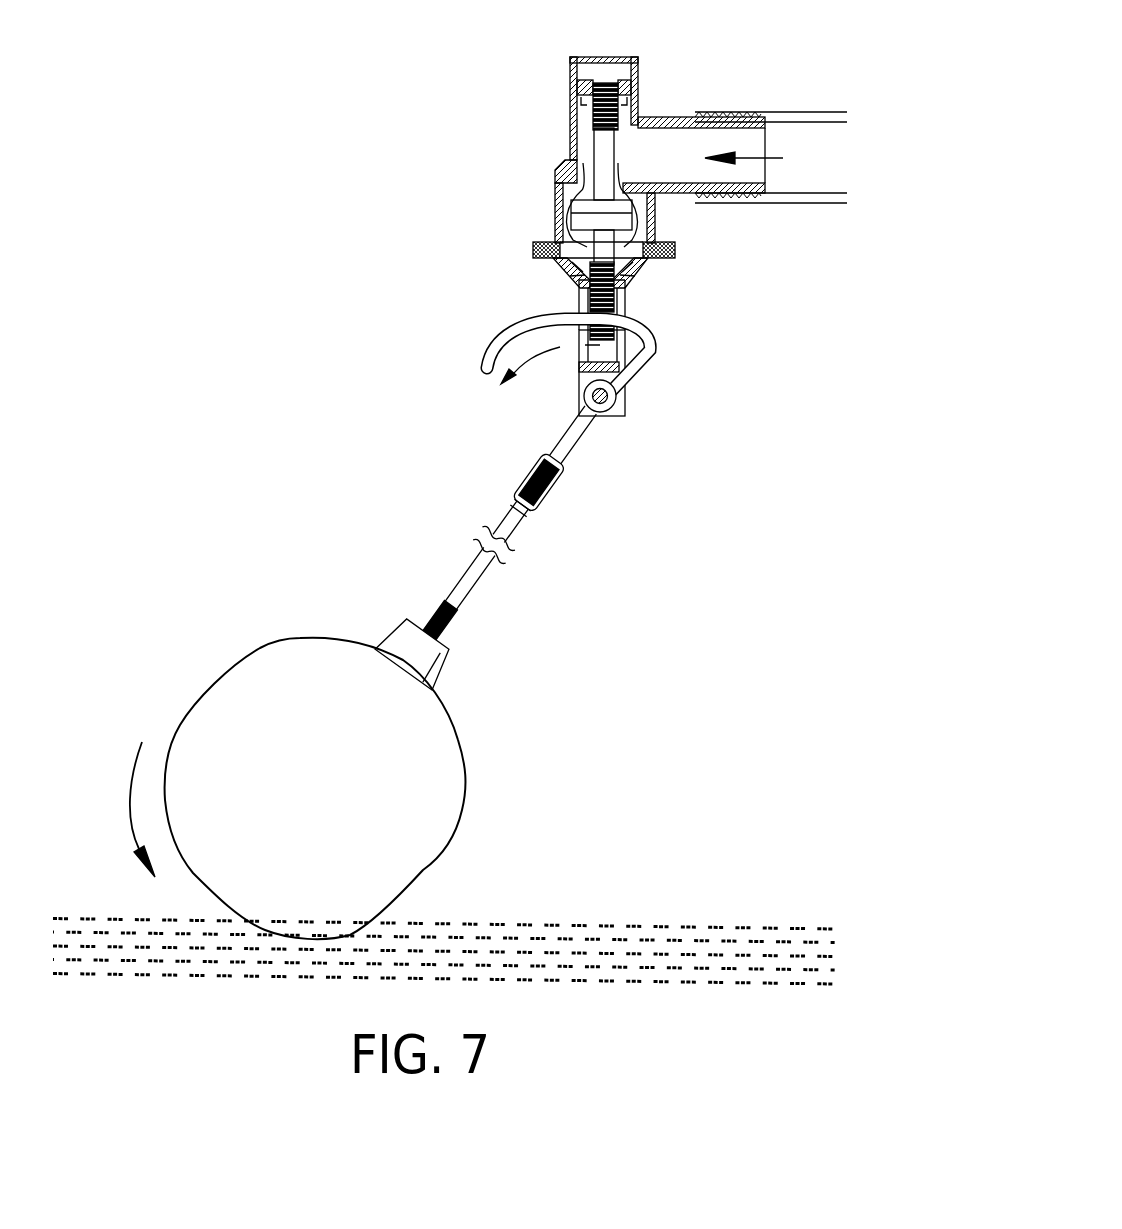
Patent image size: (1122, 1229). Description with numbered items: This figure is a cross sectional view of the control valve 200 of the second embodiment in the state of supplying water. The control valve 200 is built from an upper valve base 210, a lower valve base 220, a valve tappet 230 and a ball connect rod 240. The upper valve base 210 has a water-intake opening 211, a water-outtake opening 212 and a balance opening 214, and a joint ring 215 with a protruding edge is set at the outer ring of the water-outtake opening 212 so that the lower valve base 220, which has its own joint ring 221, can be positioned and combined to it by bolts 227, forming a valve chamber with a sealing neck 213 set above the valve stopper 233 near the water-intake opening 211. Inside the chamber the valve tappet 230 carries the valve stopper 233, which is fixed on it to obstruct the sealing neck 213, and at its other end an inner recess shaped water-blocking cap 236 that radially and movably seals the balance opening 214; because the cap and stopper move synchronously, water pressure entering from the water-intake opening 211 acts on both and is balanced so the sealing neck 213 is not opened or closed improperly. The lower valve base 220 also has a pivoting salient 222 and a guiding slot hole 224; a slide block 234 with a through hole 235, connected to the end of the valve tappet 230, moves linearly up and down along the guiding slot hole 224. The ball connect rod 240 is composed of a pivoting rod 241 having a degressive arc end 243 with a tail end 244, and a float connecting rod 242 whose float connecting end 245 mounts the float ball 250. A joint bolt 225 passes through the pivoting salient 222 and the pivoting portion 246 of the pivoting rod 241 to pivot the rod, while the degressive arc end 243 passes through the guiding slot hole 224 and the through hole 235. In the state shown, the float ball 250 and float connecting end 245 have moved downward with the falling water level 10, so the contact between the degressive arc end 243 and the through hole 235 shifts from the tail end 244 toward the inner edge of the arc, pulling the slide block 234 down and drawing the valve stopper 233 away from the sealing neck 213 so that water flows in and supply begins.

The water level 10 is at (658, 948).
The control valve 200 is at (352, 148).
The upper valve base 210 is at (779, 148).
The water-intake opening 211 is at (755, 145).
The water-outtake opening 212 is at (555, 168).
The sealing neck 213 is at (593, 223).
The balance opening 214 is at (608, 67).
The joint ring 215 is at (675, 245).
The lower valve base 220 is at (664, 261).
The joint ring 221 is at (675, 253).
The pivoting salient 222 is at (625, 414).
The guiding slot hole 224 is at (580, 350).
The joint bolt 225 is at (600, 412).
The bolts 227 is at (680, 118).
The valve tappet 230 is at (600, 150).
The valve stopper 233 is at (578, 282).
The slide block 234 is at (637, 308).
The through hole 235 is at (630, 350).
The water-blocking cap 236 is at (572, 92).
The ball connect rod 240 is at (510, 555).
The pivoting rod 241 is at (553, 440).
The float connecting rod 242 is at (472, 573).
The degressive arc end 243 is at (508, 320).
The tail end 244 is at (484, 378).
The float connecting end 245 is at (450, 623).
The pivoting portion 246 is at (565, 486).
The float ball 250 is at (257, 708).